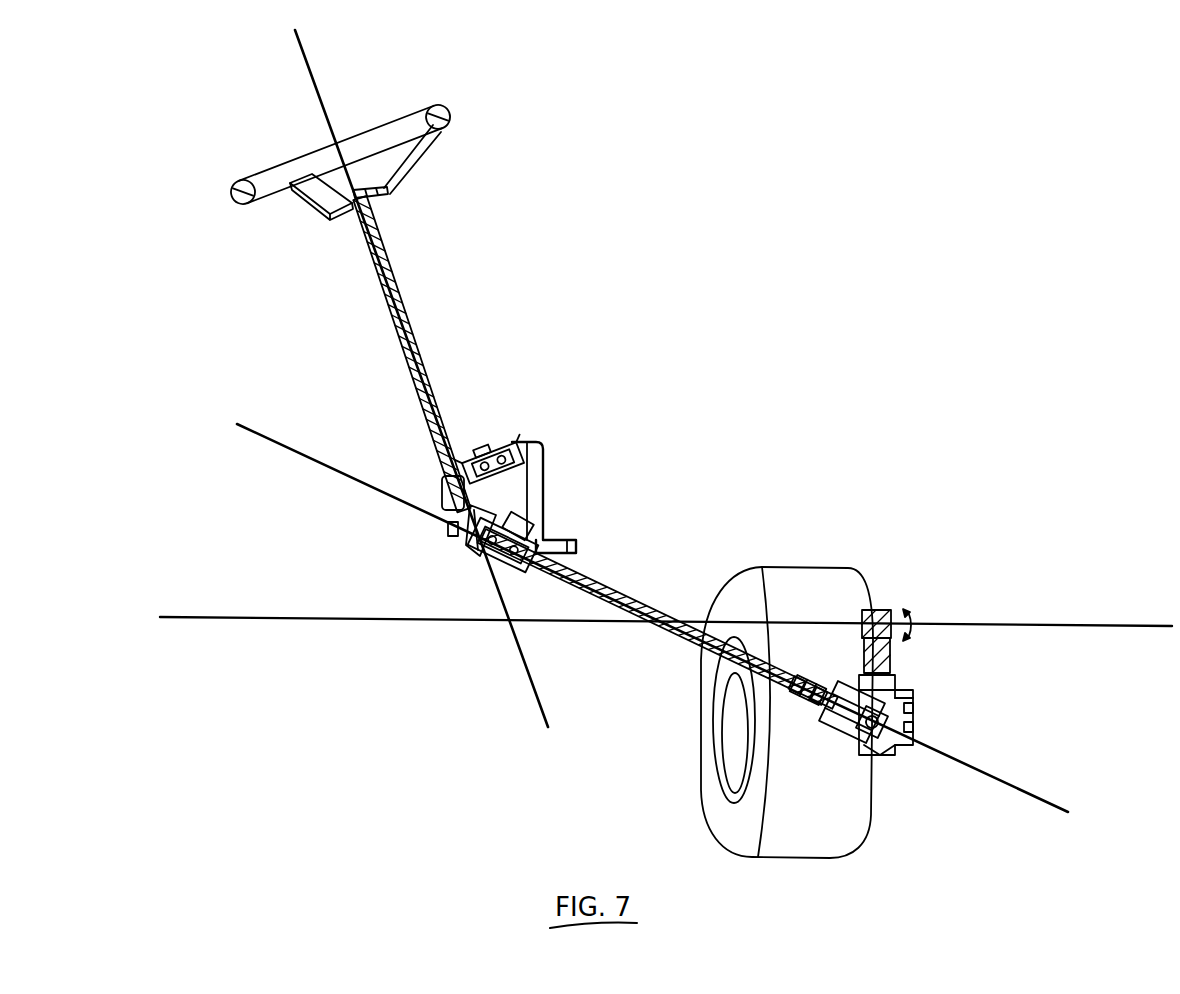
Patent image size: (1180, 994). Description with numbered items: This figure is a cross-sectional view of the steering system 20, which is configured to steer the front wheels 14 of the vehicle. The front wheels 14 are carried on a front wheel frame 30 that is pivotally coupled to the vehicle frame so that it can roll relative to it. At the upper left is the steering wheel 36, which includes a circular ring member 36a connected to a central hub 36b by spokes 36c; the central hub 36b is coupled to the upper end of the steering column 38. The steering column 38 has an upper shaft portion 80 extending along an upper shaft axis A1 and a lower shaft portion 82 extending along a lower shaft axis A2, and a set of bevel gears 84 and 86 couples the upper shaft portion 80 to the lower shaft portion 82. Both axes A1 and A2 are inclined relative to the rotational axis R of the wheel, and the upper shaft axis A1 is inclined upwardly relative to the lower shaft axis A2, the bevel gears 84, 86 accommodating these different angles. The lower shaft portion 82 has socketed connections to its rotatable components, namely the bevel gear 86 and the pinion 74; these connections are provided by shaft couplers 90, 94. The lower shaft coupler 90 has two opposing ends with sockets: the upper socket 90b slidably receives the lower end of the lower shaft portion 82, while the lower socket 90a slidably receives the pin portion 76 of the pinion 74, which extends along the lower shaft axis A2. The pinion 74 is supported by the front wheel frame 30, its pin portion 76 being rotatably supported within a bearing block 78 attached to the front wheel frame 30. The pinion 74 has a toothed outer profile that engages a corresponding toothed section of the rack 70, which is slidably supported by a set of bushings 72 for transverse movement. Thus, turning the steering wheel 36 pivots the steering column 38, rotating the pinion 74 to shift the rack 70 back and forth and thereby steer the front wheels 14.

The front wheels 14 is at (800, 583).
The steering system 20 is at (700, 278).
The front wheel frame 30 is at (891, 726).
The steering wheel 36 is at (309, 160).
The circular ring member 36a is at (233, 183).
The central hub 36b is at (377, 197).
The spokes 36c is at (413, 163).
The steering column 38 is at (504, 498).
The rack 70 is at (912, 722).
The bushings 72 is at (912, 700).
The pinion 74 is at (880, 755).
The pin portion 76 is at (864, 735).
The bearing block 78 is at (835, 722).
The upper shaft portion 80 is at (412, 325).
The lower shaft portion 82 is at (627, 603).
The bevel gear 84 is at (472, 518).
The bevel gear 86 is at (482, 540).
The lower shaft coupler 90 is at (810, 708).
The lower socket 90a is at (822, 693).
The upper socket 90b is at (803, 686).
The shaft coupler 94 is at (527, 562).
The upper shaft axis A1 is at (306, 50).
The lower shaft axis A2 is at (278, 450).
The rotational axis R is at (222, 614).